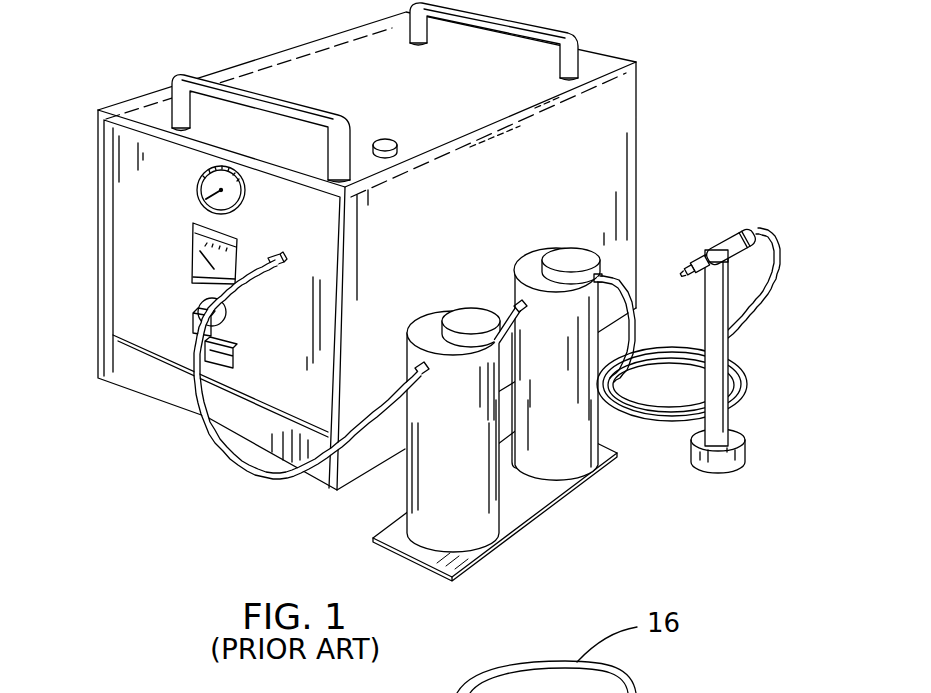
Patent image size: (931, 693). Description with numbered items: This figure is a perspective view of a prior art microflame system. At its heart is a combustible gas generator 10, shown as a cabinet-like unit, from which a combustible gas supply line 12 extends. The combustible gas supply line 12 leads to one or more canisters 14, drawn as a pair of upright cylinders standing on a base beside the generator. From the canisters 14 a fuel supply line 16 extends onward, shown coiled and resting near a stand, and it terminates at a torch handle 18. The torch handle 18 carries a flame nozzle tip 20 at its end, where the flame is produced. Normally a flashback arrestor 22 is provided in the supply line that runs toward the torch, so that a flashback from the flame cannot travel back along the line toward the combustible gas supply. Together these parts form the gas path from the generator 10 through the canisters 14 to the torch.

The combustible gas generator 10 is at (212, 35).
The combustible gas supply line 12 is at (248, 470).
The canisters 14 is at (467, 487).
The fuel supply line 16 is at (624, 278).
The torch handle 18 is at (730, 265).
The flame nozzle tip 20 is at (695, 273).
The flashback arrestor 22 is at (736, 232).